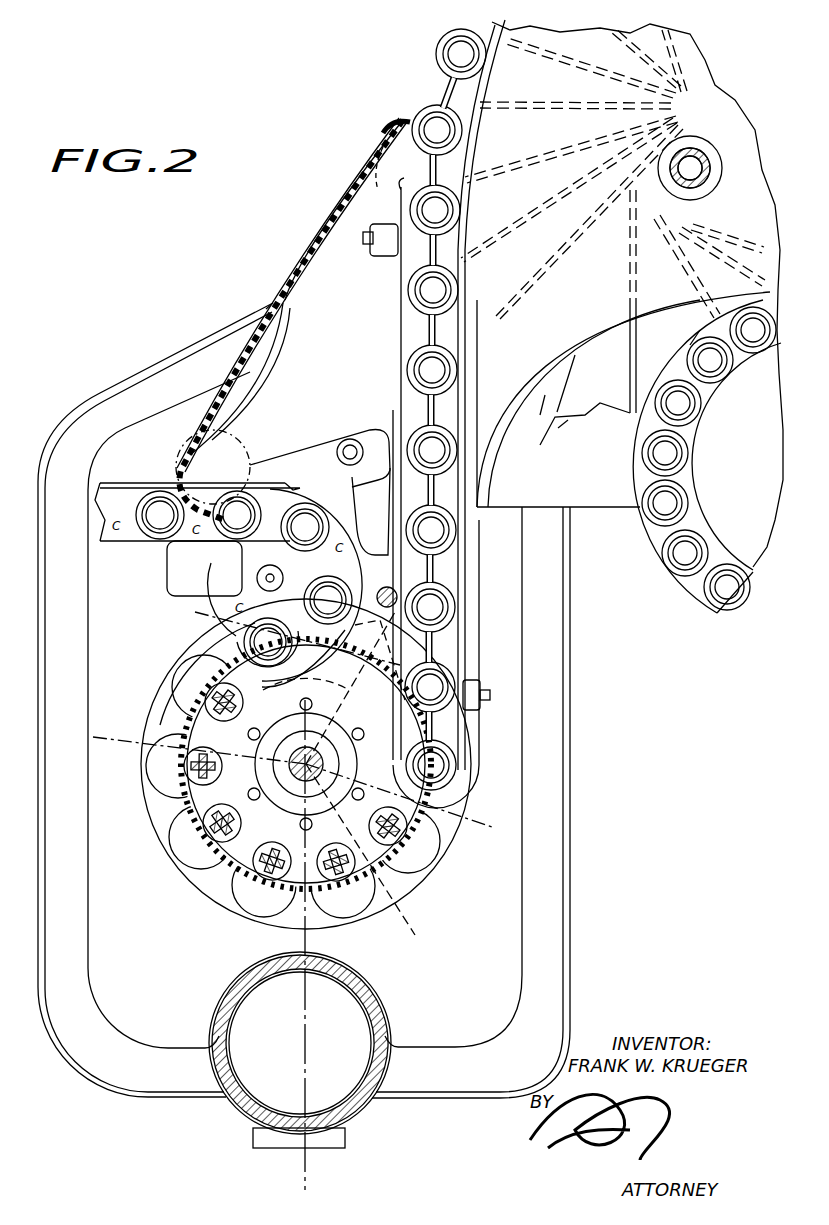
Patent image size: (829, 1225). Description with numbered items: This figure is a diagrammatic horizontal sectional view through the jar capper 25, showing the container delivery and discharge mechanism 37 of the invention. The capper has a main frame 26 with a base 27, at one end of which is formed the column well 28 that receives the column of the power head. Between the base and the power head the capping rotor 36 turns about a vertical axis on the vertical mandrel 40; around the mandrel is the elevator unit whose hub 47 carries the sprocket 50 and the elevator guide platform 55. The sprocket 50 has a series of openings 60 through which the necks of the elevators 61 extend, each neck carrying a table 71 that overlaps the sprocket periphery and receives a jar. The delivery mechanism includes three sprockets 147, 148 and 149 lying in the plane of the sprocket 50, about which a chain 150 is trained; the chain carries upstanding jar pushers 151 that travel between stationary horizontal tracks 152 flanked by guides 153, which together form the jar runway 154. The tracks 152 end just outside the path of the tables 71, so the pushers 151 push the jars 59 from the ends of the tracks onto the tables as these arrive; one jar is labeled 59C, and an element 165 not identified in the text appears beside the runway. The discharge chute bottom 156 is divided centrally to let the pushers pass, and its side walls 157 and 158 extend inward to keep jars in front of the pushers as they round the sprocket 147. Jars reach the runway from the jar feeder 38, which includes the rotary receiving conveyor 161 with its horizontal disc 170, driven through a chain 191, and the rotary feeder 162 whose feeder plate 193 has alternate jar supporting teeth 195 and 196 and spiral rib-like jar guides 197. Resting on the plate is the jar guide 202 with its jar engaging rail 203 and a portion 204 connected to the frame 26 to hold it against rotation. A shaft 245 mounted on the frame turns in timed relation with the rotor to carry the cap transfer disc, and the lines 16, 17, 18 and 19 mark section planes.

The section line 16 is at (500, 822).
The section line 17 is at (392, 612).
The section line 18 is at (130, 740).
The section line 19 is at (285, 630).
The jar capper 25 is at (590, 788).
The main frame 26 is at (578, 688).
The base 27 is at (572, 892).
The column well 28 is at (238, 1110).
The capping rotor 36 is at (188, 880).
The delivery and discharge mechanism 37 is at (258, 296).
The jar feeder 38 is at (440, 95).
The vertical mandrel 40 is at (294, 783).
The hub 47 is at (270, 777).
The sprocket 50 is at (212, 730).
The elevator guide platform 55 is at (180, 835).
The jars 59 is at (456, 773).
The roller 59C is at (255, 625).
The openings 60 is at (368, 830).
The elevators 61 is at (430, 860).
The table 71 is at (405, 790).
The sprocket 147 is at (212, 588).
The sprocket 148 is at (245, 450).
The sprocket 149 is at (423, 453).
The chain 150 is at (305, 250).
The jar pushers 151 is at (270, 918).
The stationary horizontal tracks 152 is at (470, 480).
The guides 153 is at (466, 410).
The jar runway 154 is at (408, 342).
The chute bottom 156 is at (305, 490).
The side wall 157 is at (257, 578).
The side wall 158 is at (345, 508).
The rotary receiving conveyor 161 is at (720, 612).
The rotary feeder 162 is at (705, 150).
The support plate 165 is at (148, 470).
The horizontal disc 170 is at (712, 620).
The chain 191 is at (327, 228).
The feeder plate 193 is at (604, 425).
The jar supporting teeth 195 is at (551, 432).
The jar supporting teeth 196 is at (590, 428).
The rib-like jar guides 197 is at (690, 345).
The jar guide 202 is at (596, 301).
The jar engaging rail 203 is at (672, 342).
The portion 204 is at (485, 440).
The shaft 245 is at (400, 596).